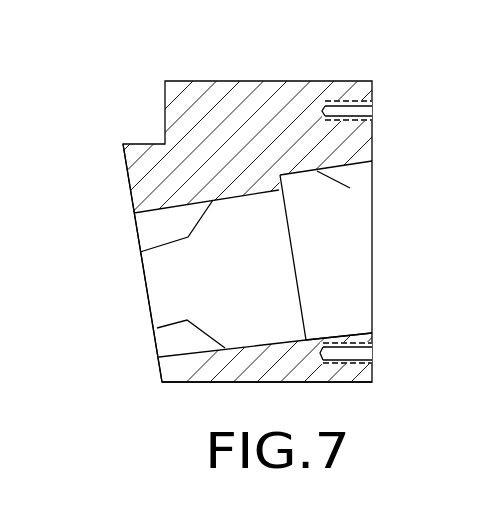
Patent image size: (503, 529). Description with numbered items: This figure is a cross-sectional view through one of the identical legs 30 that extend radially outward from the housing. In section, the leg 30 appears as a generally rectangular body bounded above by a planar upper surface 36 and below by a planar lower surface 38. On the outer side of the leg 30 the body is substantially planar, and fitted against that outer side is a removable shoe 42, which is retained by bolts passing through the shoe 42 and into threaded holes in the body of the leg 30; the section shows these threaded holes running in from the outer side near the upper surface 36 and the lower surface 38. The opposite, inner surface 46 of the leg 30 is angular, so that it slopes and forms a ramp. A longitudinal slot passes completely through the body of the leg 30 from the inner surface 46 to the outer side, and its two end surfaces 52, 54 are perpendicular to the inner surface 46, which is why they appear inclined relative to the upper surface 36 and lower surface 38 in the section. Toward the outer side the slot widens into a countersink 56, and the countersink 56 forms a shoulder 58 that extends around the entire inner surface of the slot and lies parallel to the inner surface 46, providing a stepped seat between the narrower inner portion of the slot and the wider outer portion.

The leg 30 is at (236, 74).
The upper surface 36 is at (303, 80).
The lower surface 38 is at (363, 382).
The removable shoe 42 is at (372, 335).
The inner surface 46 is at (130, 190).
The end surface 52 is at (142, 253).
The end surface 54 is at (157, 328).
The countersink 56 is at (350, 188).
The shoulder 58 is at (310, 338).